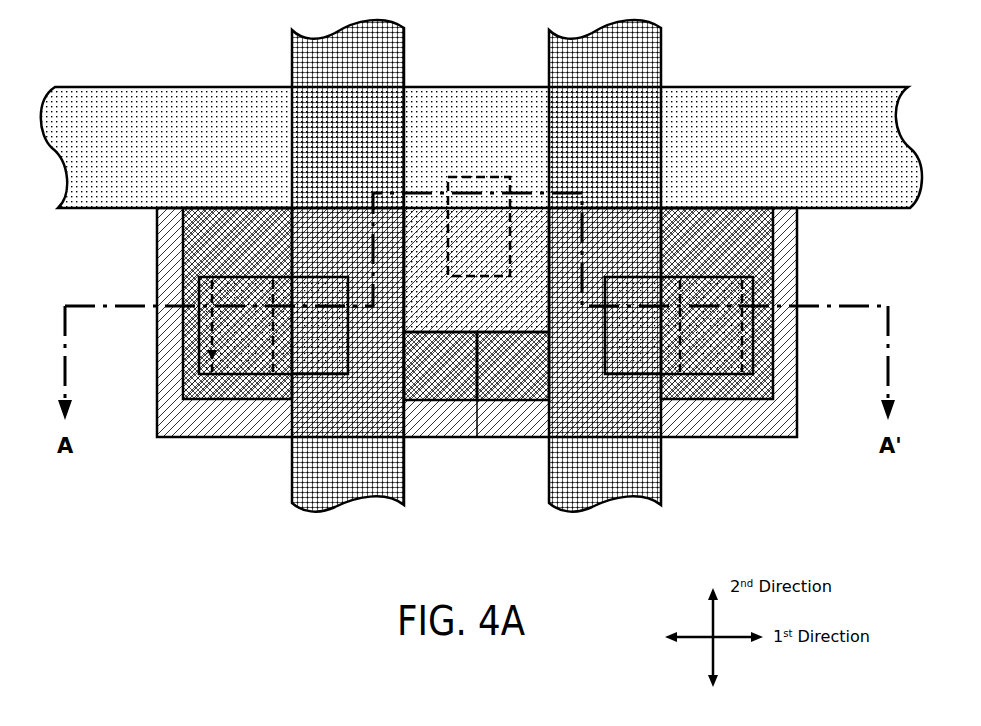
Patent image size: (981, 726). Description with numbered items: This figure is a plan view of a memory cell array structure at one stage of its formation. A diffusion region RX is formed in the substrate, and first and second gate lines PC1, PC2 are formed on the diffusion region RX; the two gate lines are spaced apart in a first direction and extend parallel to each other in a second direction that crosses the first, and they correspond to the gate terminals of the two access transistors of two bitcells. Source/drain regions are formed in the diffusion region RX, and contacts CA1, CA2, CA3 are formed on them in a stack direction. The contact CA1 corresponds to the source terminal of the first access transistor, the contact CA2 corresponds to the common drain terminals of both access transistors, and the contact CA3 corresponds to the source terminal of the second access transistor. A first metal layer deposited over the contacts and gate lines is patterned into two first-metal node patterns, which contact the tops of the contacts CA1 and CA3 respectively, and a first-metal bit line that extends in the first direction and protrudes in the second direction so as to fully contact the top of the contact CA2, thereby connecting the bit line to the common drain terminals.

The contact CA1 is at (199, 357).
The contact CA2 is at (471, 288).
The contact CA3 is at (732, 383).
The diffusion region RX is at (708, 392).
The first gate line PC1 is at (327, 470).
The second gate line PC2 is at (590, 485).